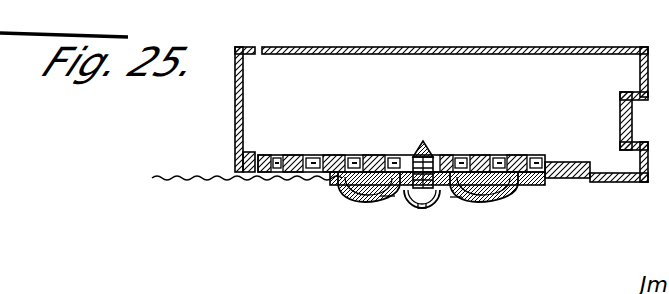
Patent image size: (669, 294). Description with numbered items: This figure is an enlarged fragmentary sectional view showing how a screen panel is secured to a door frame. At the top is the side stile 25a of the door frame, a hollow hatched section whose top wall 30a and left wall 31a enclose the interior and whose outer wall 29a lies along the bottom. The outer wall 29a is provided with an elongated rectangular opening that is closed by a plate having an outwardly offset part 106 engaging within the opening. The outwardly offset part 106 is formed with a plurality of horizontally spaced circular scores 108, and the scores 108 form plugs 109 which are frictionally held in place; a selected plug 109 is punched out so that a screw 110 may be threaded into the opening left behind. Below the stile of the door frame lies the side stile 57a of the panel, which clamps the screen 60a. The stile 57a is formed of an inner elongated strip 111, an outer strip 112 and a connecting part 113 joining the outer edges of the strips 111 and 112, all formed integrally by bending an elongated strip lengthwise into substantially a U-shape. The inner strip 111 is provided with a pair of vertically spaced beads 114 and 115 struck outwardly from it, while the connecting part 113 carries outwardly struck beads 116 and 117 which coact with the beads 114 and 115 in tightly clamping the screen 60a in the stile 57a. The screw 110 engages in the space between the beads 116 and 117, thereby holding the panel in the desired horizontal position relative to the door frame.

The side stile 25a is at (399, 119).
The top wall of casing 30a is at (541, 57).
The left side wall of casing 31a is at (235, 100).
The outer wall 29a is at (619, 182).
The screen 60a is at (250, 183).
The scores 108 is at (312, 182).
The inner elongated strip 111 is at (457, 156).
The bead 115 is at (485, 156).
The plugs 109 is at (500, 157).
The connecting part 113 is at (519, 197).
The bead 116 is at (356, 200).
The bead 117 is at (495, 200).
The bead 114 is at (369, 154).
The screw 110 is at (432, 206).
The side stile 57a is at (391, 199).
The outer strip 112 is at (458, 200).
The outwardly offset part 106 is at (566, 180).